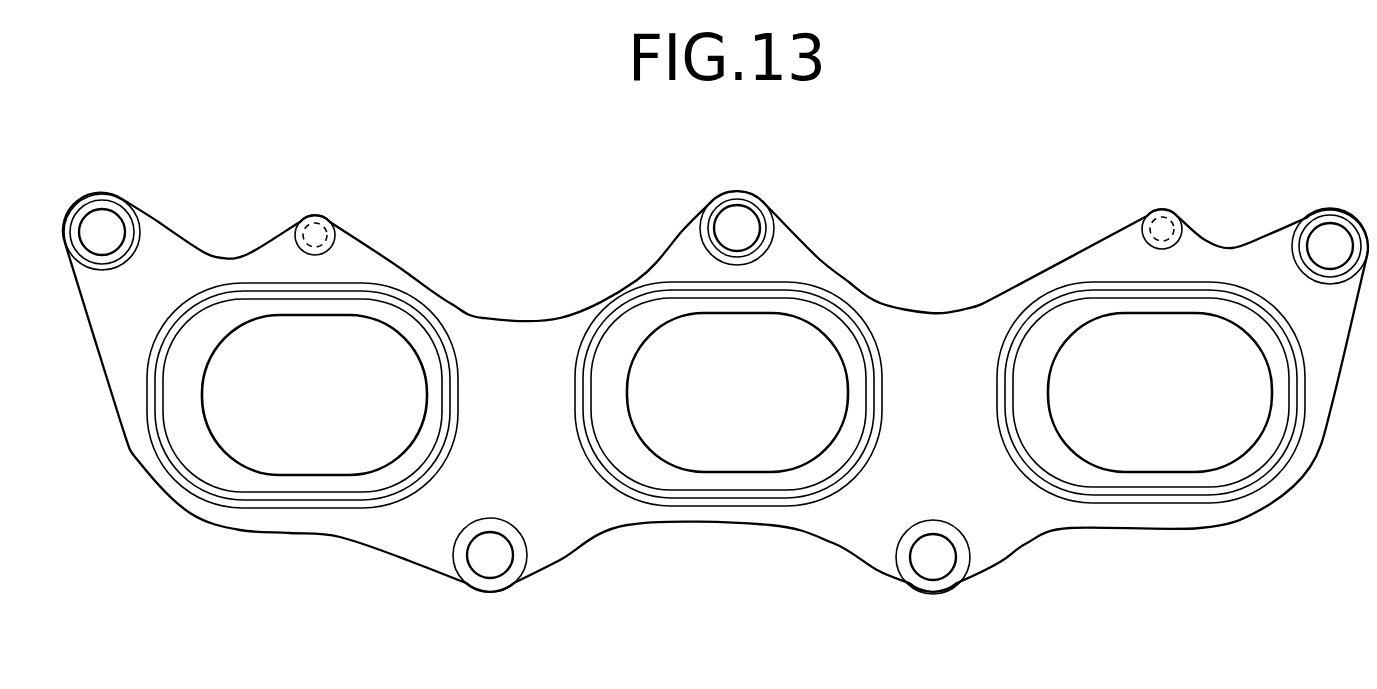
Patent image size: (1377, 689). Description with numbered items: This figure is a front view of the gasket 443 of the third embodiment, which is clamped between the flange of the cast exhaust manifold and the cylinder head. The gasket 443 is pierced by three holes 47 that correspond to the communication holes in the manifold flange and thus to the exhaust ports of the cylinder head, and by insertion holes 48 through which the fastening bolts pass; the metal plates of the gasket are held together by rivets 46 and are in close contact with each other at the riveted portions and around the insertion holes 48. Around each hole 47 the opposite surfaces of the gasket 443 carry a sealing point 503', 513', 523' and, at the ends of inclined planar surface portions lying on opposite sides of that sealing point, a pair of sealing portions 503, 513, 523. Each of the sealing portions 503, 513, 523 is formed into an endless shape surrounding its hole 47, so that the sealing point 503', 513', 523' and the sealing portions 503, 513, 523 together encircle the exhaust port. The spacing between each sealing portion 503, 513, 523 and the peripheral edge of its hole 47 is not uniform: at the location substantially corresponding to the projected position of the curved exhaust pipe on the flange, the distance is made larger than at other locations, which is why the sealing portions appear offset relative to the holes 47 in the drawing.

The gasket 443 is at (880, 300).
The rivets 46 is at (313, 215).
The holes 47 is at (206, 402).
The insertion holes 48 is at (110, 228).
The sealing portions 503 is at (1151, 336).
The sealing point 503' is at (1151, 472).
The sealing portions 513 is at (728, 307).
The sealing point 513' is at (728, 470).
The sealing portions 523 is at (311, 348).
The sealing point 523' is at (302, 470).